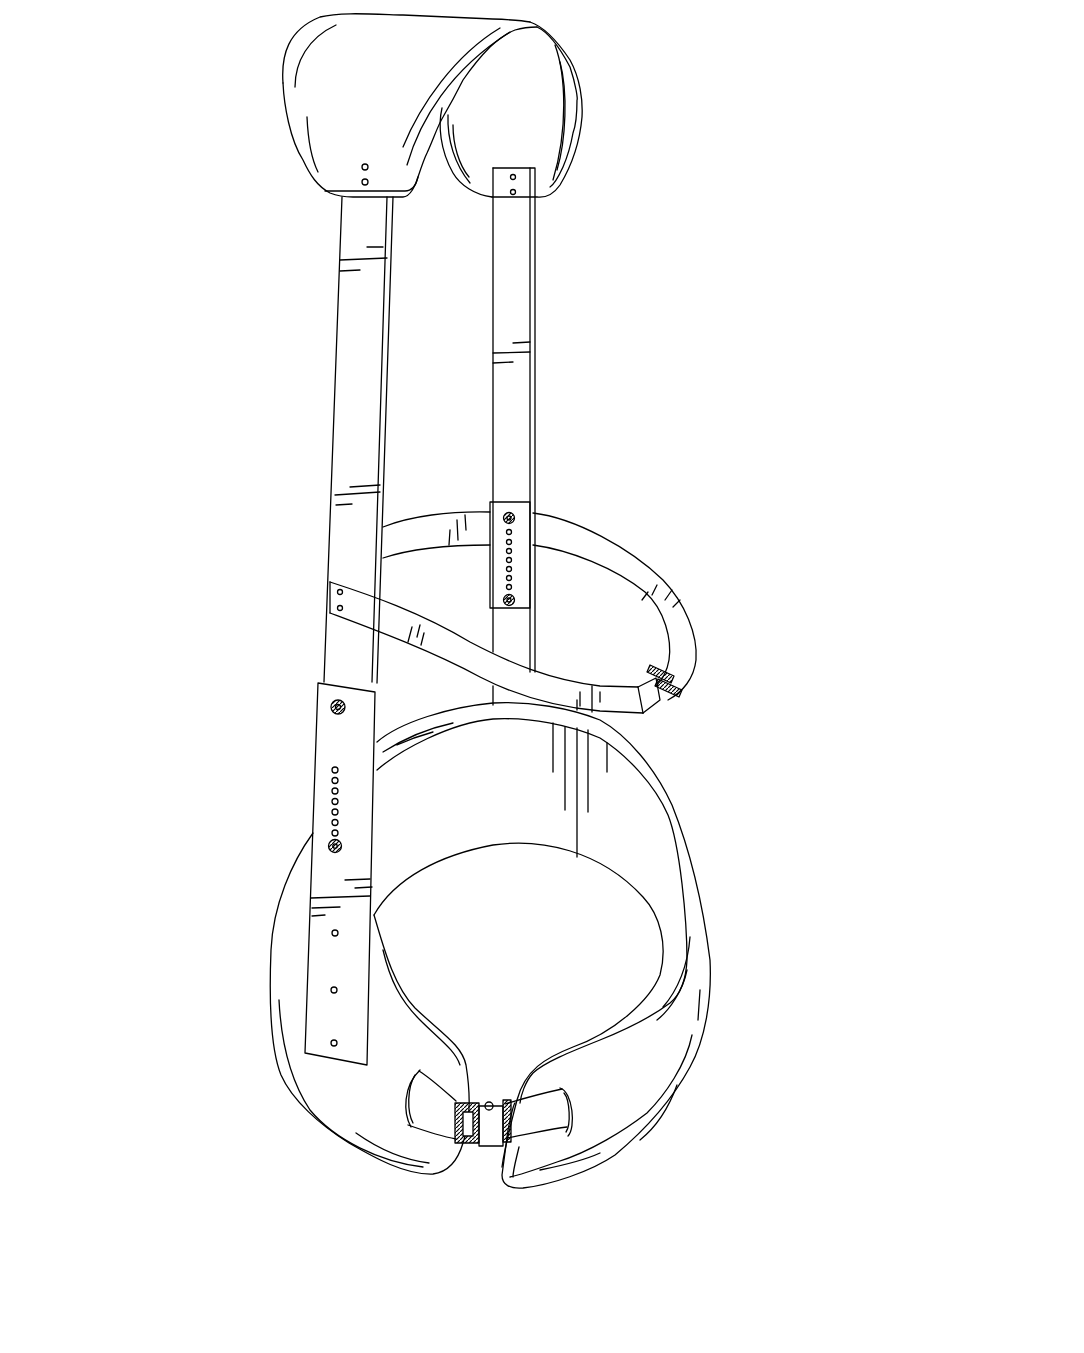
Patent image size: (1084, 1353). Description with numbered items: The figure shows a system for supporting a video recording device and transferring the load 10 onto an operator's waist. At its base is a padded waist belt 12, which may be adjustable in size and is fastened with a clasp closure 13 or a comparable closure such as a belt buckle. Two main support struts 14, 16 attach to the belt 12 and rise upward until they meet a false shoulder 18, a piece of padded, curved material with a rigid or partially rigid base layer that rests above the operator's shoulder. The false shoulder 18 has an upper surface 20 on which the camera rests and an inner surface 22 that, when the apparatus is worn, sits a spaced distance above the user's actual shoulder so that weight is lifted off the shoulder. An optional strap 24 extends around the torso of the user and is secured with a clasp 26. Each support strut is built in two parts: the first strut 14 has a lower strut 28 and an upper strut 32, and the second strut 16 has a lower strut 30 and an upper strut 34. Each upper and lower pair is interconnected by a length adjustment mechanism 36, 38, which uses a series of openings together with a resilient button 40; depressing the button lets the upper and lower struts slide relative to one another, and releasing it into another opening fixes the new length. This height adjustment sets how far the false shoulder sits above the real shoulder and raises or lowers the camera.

The system for supporting a video recording device and transferring the load 10 is at (654, 336).
The padded waist belt 12 is at (697, 920).
The clasp closure 13 is at (486, 1148).
The main support strut 14 is at (298, 535).
The main support strut 16 is at (558, 285).
The false shoulder 18 is at (647, 155).
The upper surface 20 is at (326, 41).
The inner surface 22 is at (558, 94).
The strap 24 is at (625, 550).
The clasp 26 is at (668, 698).
The lower strut 28 is at (327, 738).
The lower strut 30 is at (536, 634).
The upper strut 32 is at (332, 441).
The upper strut 34 is at (536, 449).
The length adjustment mechanism 36 is at (318, 803).
The length adjustment mechanism 38 is at (522, 521).
The resilient button 40 is at (322, 852).